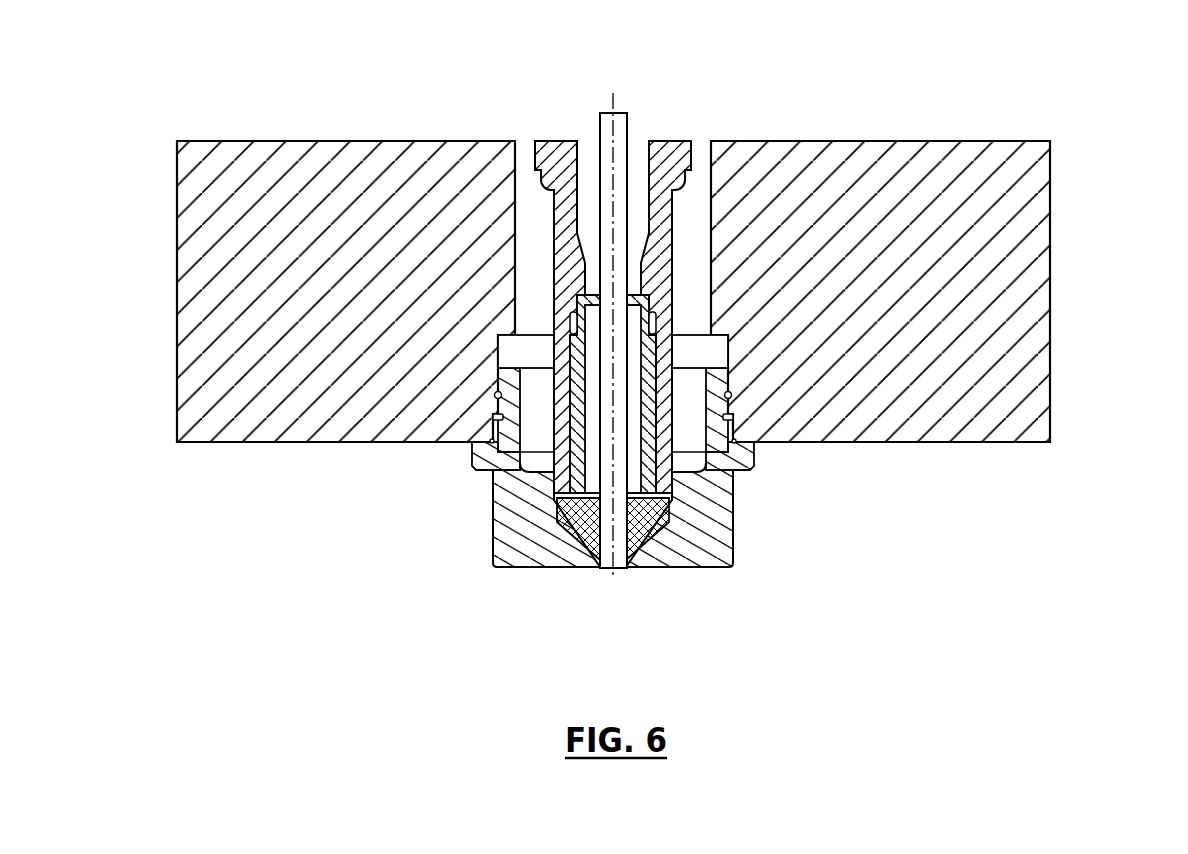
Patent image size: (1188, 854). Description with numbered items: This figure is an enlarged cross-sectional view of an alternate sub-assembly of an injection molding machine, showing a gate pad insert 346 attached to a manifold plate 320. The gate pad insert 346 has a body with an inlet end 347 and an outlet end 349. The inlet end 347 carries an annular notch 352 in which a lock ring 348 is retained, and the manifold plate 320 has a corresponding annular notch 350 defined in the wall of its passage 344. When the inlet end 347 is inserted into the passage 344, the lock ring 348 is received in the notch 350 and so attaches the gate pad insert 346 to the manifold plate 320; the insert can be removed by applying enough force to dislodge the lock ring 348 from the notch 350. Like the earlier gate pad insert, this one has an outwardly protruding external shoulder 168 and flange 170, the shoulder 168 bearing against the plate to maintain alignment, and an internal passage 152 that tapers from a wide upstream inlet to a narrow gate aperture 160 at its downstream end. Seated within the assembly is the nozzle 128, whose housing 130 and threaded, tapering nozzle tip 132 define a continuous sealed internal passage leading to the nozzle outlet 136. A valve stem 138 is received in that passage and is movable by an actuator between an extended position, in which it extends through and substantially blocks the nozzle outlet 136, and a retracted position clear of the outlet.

The manifold plate 320 is at (1050, 181).
The passage 344 is at (528, 140).
The nozzle 128 is at (574, 122).
The valve stem 138 is at (622, 160).
The housing 130 is at (677, 155).
The annular notch 352 is at (508, 368).
The nozzle tip 132 is at (647, 363).
The annular notch 350 is at (497, 392).
The inlet end 347 is at (722, 380).
The lock ring 348 is at (490, 420).
The external shoulder 168 is at (733, 427).
The internal passage 152 is at (527, 442).
The flange 170 is at (747, 465).
The gate pad insert 346 is at (487, 508).
The outlet end 349 is at (723, 538).
The nozzle outlet 136 is at (597, 556).
The gate aperture 160 is at (614, 566).